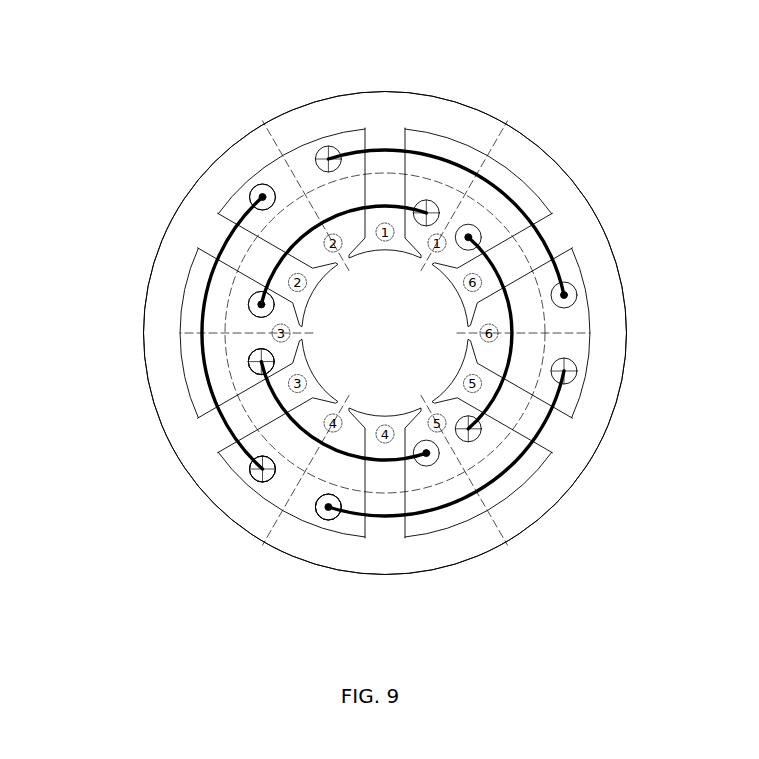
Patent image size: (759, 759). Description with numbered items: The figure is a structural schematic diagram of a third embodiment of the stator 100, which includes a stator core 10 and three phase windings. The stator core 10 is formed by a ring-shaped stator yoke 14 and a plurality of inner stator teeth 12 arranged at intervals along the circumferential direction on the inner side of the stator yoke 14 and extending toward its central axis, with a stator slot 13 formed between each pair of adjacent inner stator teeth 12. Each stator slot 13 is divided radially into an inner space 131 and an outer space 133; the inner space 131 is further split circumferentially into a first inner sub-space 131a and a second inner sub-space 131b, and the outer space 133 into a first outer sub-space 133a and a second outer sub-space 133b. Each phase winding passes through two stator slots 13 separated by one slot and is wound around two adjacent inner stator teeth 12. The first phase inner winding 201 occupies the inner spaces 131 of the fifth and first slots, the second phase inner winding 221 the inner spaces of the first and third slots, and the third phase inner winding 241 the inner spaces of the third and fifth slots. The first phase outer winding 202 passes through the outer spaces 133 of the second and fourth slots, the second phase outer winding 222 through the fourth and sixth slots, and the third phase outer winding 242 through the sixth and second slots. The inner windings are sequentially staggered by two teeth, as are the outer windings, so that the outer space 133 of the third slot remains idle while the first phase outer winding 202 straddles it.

The stator 100 is at (369, 50).
The stator core 10 is at (427, 83).
The inner stator teeth 12 is at (383, 142).
The stator slot 13 is at (282, 177).
The stator yoke 14 is at (488, 135).
The inner space 131 is at (94, 304).
The first inner sub-space 131a is at (238, 323).
The second inner sub-space 131b is at (238, 355).
The outer space 133 is at (222, 592).
The first outer sub-space 133a is at (277, 490).
The second outer sub-space 133b is at (310, 505).
The first phase inner winding 201 is at (515, 318).
The first phase outer winding 202 is at (205, 288).
The second phase inner winding 221 is at (248, 196).
The second phase outer winding 222 is at (470, 490).
The third phase inner winding 241 is at (339, 458).
The third phase outer winding 242 is at (517, 202).